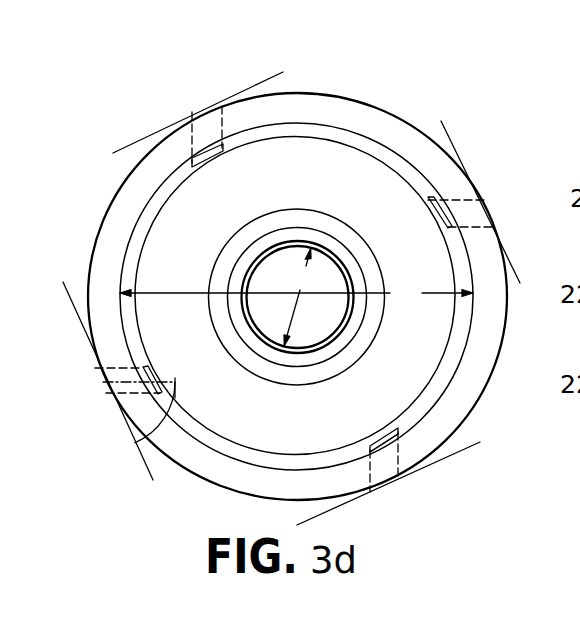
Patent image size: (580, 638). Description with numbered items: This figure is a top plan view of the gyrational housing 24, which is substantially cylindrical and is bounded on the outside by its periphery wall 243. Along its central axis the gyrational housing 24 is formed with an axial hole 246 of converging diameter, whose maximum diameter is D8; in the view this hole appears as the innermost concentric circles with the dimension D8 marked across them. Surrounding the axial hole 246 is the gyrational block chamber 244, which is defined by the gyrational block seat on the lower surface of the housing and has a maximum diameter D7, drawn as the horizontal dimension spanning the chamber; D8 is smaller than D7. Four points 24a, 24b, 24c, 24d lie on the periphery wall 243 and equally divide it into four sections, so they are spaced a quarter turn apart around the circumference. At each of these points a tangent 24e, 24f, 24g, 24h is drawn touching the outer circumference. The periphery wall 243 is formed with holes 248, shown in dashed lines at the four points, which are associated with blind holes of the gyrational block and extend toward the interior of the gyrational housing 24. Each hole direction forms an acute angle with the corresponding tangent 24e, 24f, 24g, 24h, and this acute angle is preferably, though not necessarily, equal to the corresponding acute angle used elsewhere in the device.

The gyrational housing 24 is at (317, 95).
The point on periphery wall 24a is at (487, 210).
The point on periphery wall 24b is at (207, 110).
The point on periphery wall 24c is at (107, 387).
The point on periphery wall 24d is at (383, 485).
The tangent 24e is at (455, 147).
The tangent 24f is at (262, 83).
The tangent 24g is at (84, 335).
The tangent 24h is at (433, 462).
The periphery wall 243 is at (400, 123).
The gyrational block chamber 244 is at (338, 163).
The axial hole 246 is at (305, 337).
The holes 248 is at (386, 433).
The maximum diameter of gyrational block chamber D7 is at (296, 299).
The maximum diameter of axial hole D8 is at (298, 297).